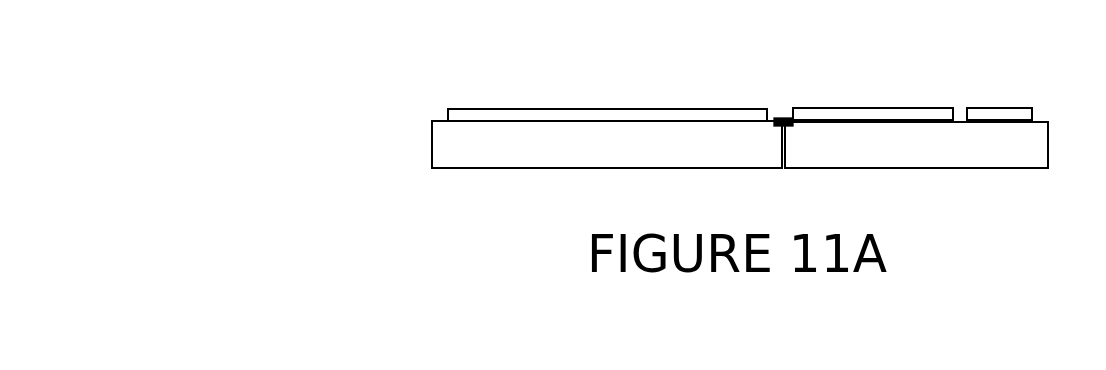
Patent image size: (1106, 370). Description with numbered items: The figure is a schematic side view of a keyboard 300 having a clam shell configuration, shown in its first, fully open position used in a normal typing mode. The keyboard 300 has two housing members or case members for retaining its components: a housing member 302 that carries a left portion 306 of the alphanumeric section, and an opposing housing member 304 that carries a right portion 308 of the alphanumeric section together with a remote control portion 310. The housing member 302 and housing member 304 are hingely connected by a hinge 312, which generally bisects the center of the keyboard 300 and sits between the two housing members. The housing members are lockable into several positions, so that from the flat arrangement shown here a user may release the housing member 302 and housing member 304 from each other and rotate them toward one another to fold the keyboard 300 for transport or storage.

The keyboard 300 is at (717, 48).
The housing member 302 is at (500, 157).
The housing member 304 is at (918, 168).
The left portion of the alphanumeric section 306 is at (545, 110).
The right portion of the alphanumeric section 308 is at (860, 107).
The remote control portion 310 is at (978, 107).
The hinge 312 is at (783, 117).